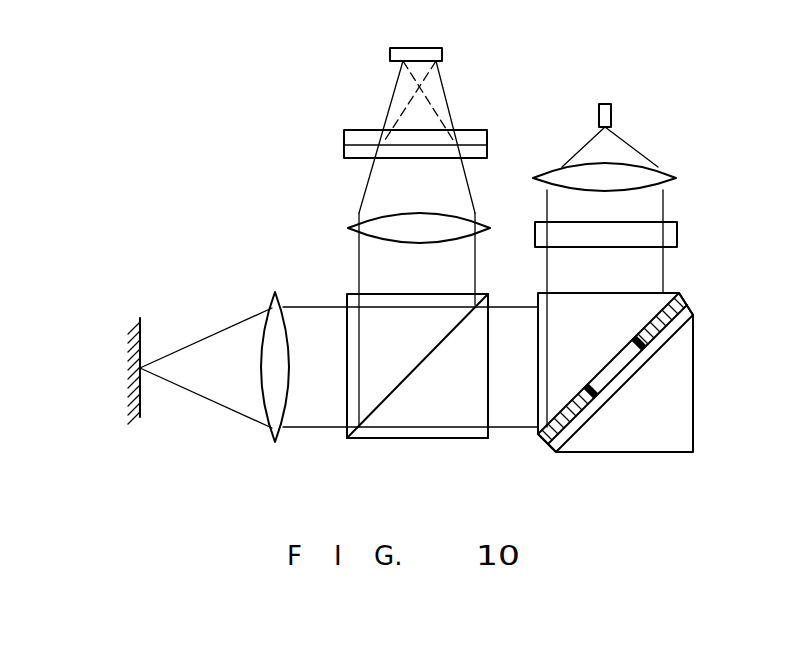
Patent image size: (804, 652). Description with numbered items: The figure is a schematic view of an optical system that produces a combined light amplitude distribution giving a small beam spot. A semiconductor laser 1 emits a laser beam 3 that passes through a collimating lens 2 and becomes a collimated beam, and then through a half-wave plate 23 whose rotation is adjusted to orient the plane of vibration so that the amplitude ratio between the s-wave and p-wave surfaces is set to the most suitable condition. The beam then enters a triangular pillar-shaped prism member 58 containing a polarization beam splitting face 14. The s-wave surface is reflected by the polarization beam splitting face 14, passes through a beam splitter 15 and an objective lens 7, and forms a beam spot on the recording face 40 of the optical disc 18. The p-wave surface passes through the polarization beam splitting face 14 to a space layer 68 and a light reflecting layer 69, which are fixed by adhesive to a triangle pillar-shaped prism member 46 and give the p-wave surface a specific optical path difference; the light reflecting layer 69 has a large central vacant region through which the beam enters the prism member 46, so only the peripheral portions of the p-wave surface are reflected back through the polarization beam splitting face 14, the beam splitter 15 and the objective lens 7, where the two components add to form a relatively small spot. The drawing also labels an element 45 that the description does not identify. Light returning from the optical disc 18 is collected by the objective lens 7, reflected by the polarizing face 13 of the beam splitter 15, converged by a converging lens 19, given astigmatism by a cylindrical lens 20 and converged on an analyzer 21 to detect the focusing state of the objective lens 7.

The semiconductor laser 1 is at (611, 113).
The collimating lens 2 is at (668, 177).
The laser beam 3 is at (620, 156).
The objective lens 7 is at (277, 363).
The polarizing face 13 is at (415, 370).
The polarization beam splitting face 14 is at (584, 389).
The beam splitter 15 is at (400, 440).
The optical disc 18 is at (112, 349).
The converging lens 19 is at (427, 228).
The cylindrical lens 20 is at (487, 140).
The analyzer 21 is at (430, 54).
The λ/2 plate 23 is at (677, 232).
The recording face 40 is at (140, 397).
The reflecting film 45 is at (688, 320).
The triangle pillar-shaped prism member 46 is at (682, 369).
The triangular pillar-shaped prism member 58 is at (600, 303).
The space layer 68 is at (540, 437).
The light reflecting layer 69 is at (565, 445).